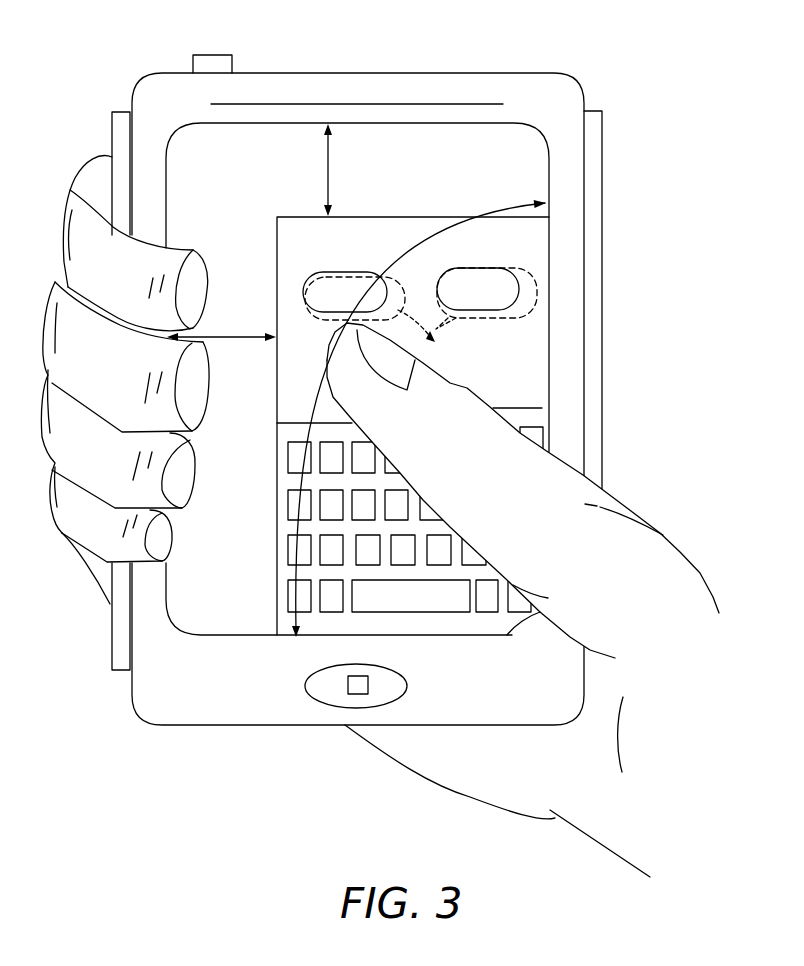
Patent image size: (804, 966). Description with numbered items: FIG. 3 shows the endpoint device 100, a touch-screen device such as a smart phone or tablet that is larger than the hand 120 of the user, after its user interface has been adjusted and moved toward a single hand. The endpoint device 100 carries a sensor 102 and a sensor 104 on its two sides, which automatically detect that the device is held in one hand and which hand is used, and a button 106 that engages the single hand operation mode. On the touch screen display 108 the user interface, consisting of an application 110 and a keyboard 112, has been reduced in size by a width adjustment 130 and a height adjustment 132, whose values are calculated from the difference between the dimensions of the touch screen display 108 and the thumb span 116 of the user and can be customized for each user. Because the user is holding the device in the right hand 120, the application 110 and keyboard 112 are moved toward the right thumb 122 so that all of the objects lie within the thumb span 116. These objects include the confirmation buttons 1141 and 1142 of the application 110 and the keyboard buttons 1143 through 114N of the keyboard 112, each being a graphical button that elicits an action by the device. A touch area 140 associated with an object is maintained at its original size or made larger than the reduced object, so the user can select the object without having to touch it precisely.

The endpoint device 100 is at (518, 73).
The sensor 102 is at (602, 225).
The sensor 104 is at (123, 118).
The button 106 is at (212, 56).
The touch screen display 108 is at (294, 153).
The application 110 is at (527, 351).
The keyboard 112 is at (284, 573).
The object 1141 is at (347, 271).
The object 1142 is at (485, 268).
The object 1143 is at (288, 455).
The object 114N is at (518, 606).
The thumb span 116 is at (481, 203).
The hand 120 is at (468, 778).
The thumb 122 is at (548, 504).
The width adjustment 130 is at (241, 335).
The height adjustment 132 is at (330, 163).
The touch area 140 is at (435, 334).